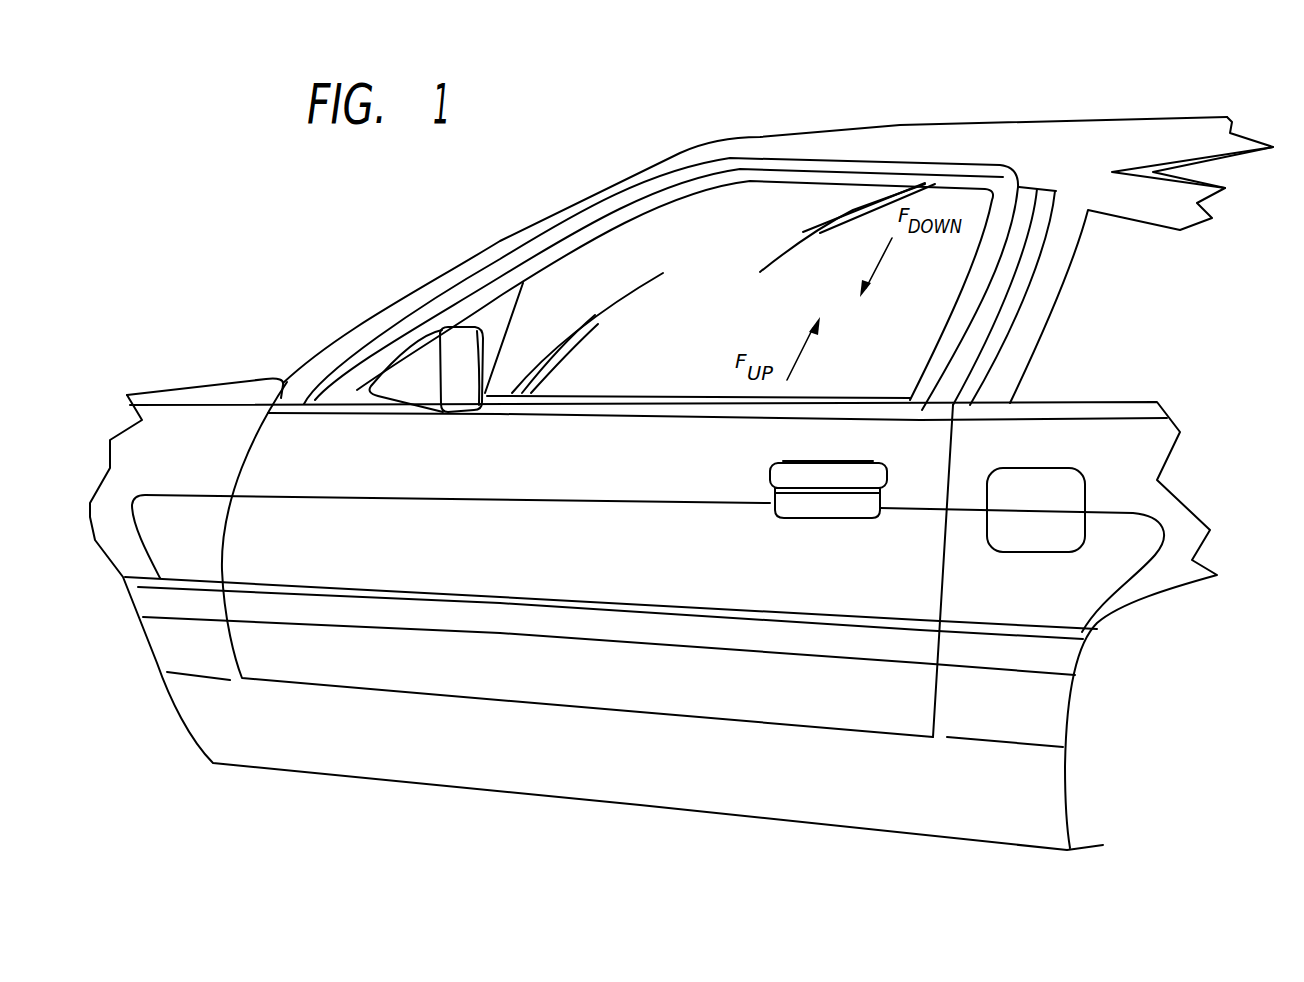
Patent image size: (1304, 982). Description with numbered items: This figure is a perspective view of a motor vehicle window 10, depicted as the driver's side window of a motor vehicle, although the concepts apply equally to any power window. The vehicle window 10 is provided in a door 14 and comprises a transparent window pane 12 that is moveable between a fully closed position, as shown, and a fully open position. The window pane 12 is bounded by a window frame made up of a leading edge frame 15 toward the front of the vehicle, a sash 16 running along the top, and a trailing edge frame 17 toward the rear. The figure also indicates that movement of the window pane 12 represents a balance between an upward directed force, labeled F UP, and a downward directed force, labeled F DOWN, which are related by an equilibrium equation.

The motor vehicle window 10 is at (472, 221).
The window pane 12 is at (893, 333).
The door 14 is at (557, 470).
The leading edge frame 15 is at (524, 298).
The sash 16 is at (820, 182).
The trailing edge frame 17 is at (975, 243).